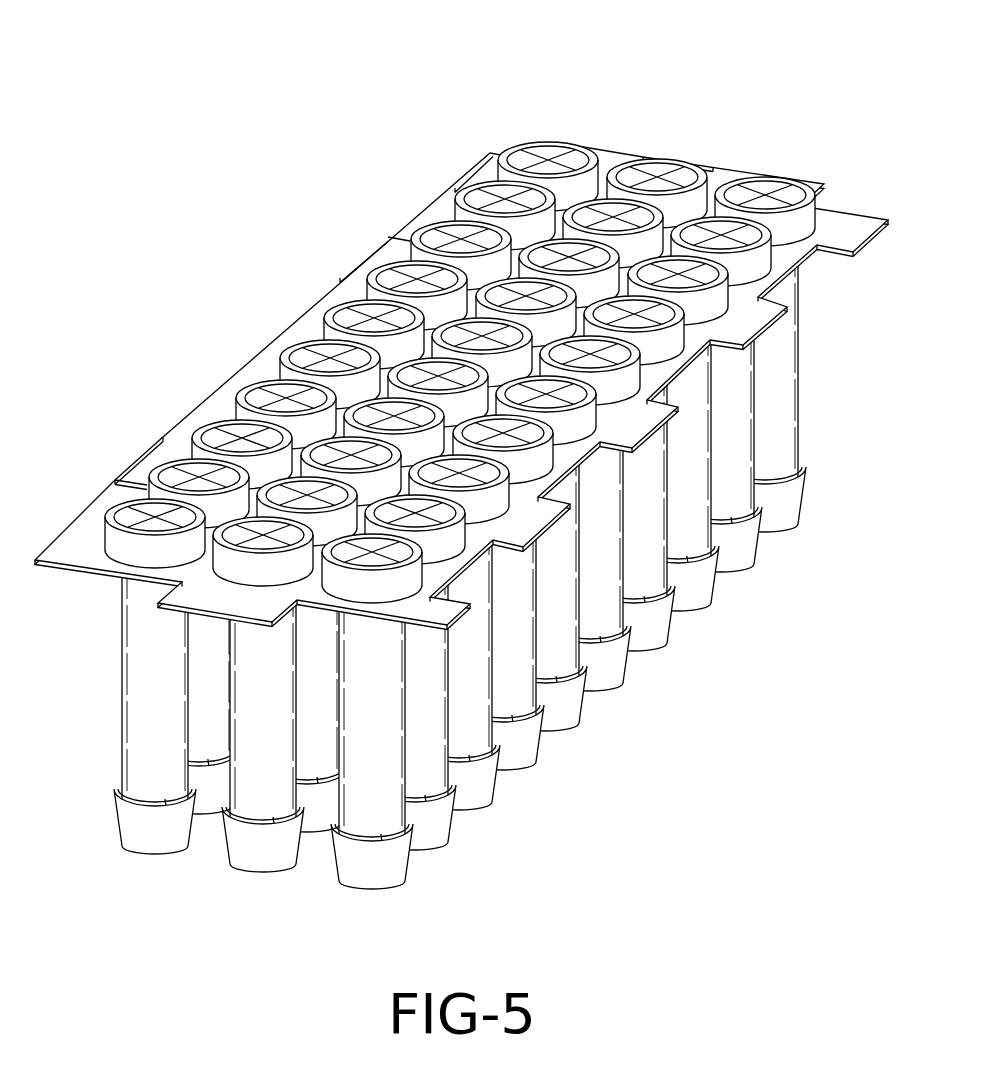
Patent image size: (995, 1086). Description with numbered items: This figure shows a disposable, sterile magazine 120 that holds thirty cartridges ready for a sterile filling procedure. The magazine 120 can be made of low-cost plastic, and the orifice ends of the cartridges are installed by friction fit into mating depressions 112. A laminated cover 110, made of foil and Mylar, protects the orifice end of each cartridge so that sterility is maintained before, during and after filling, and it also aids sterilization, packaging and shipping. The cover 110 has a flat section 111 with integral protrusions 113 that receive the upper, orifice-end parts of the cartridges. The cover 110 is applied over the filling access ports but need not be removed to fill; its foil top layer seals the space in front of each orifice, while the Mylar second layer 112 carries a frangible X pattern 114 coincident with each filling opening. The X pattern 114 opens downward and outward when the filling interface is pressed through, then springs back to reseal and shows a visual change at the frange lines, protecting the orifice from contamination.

The laminated cover 110 is at (546, 152).
The flat section 111 is at (77, 552).
The mating depressions / second layer 112 is at (793, 188).
The integral protrusions 113 is at (193, 445).
The frangible X pattern 114 is at (456, 238).
The disposable magazine 120 is at (223, 84).